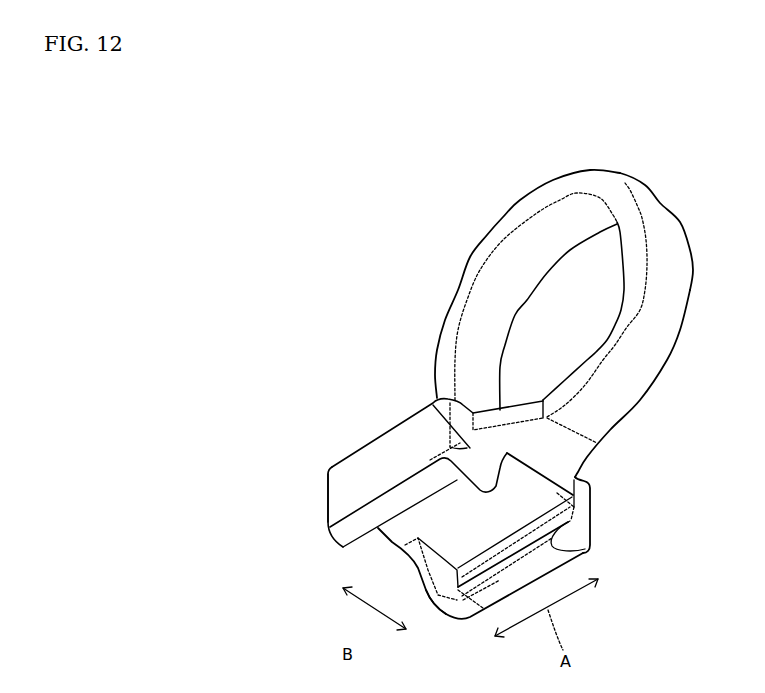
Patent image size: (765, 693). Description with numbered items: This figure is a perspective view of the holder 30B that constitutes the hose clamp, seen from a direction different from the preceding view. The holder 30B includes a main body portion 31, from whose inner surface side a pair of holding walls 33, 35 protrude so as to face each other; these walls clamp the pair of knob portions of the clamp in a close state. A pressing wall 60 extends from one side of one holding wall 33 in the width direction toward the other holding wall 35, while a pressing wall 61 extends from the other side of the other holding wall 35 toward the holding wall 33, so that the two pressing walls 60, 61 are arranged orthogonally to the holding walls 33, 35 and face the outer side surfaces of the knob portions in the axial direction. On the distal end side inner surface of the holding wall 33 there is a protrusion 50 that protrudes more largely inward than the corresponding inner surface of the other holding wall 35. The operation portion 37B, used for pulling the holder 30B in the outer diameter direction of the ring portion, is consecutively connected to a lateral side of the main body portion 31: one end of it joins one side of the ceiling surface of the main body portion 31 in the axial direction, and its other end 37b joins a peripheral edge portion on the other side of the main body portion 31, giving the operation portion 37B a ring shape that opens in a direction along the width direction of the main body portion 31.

The holder 30B is at (523, 178).
The operation portion 37B is at (657, 217).
The main body portion 31 is at (380, 443).
The pressing wall 61 is at (424, 410).
The holding wall 35 is at (338, 494).
The other end of operation portion 37b is at (580, 461).
The holding wall 33 is at (592, 513).
The protrusion 50 is at (548, 543).
The pressing wall 60 is at (443, 588).